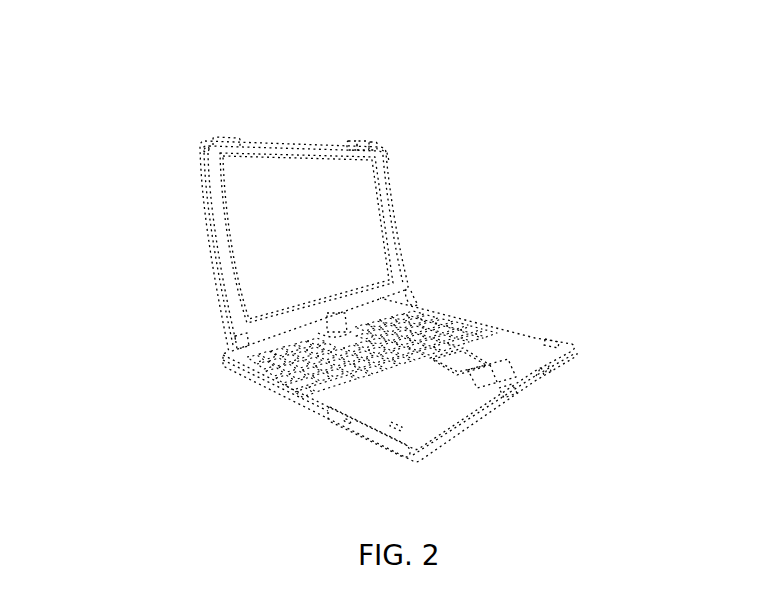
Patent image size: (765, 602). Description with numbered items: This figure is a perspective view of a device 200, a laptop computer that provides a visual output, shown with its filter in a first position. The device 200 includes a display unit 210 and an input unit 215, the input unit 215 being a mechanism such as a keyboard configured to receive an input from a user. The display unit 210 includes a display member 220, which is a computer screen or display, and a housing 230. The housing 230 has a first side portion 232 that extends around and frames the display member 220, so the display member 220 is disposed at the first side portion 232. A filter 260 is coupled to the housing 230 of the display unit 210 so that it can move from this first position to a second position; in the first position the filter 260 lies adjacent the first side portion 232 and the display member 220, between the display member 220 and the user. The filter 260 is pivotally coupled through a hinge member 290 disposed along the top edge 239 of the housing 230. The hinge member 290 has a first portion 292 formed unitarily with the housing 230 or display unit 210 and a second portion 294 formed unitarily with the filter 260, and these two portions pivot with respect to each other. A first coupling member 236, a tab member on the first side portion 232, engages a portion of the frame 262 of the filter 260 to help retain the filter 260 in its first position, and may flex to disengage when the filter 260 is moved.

The device 200 is at (558, 131).
The display unit 210 is at (182, 136).
The input unit 215 is at (467, 322).
The display member 220 is at (242, 247).
The housing 230 is at (203, 187).
The first side portion 232 is at (409, 280).
The first coupling member 236 is at (240, 317).
The top edge 239 is at (270, 146).
The filter 260 is at (360, 197).
The frame 262 is at (383, 157).
The hinge member 290 is at (368, 118).
The first portion 292 is at (372, 146).
The second portion 294 is at (354, 147).